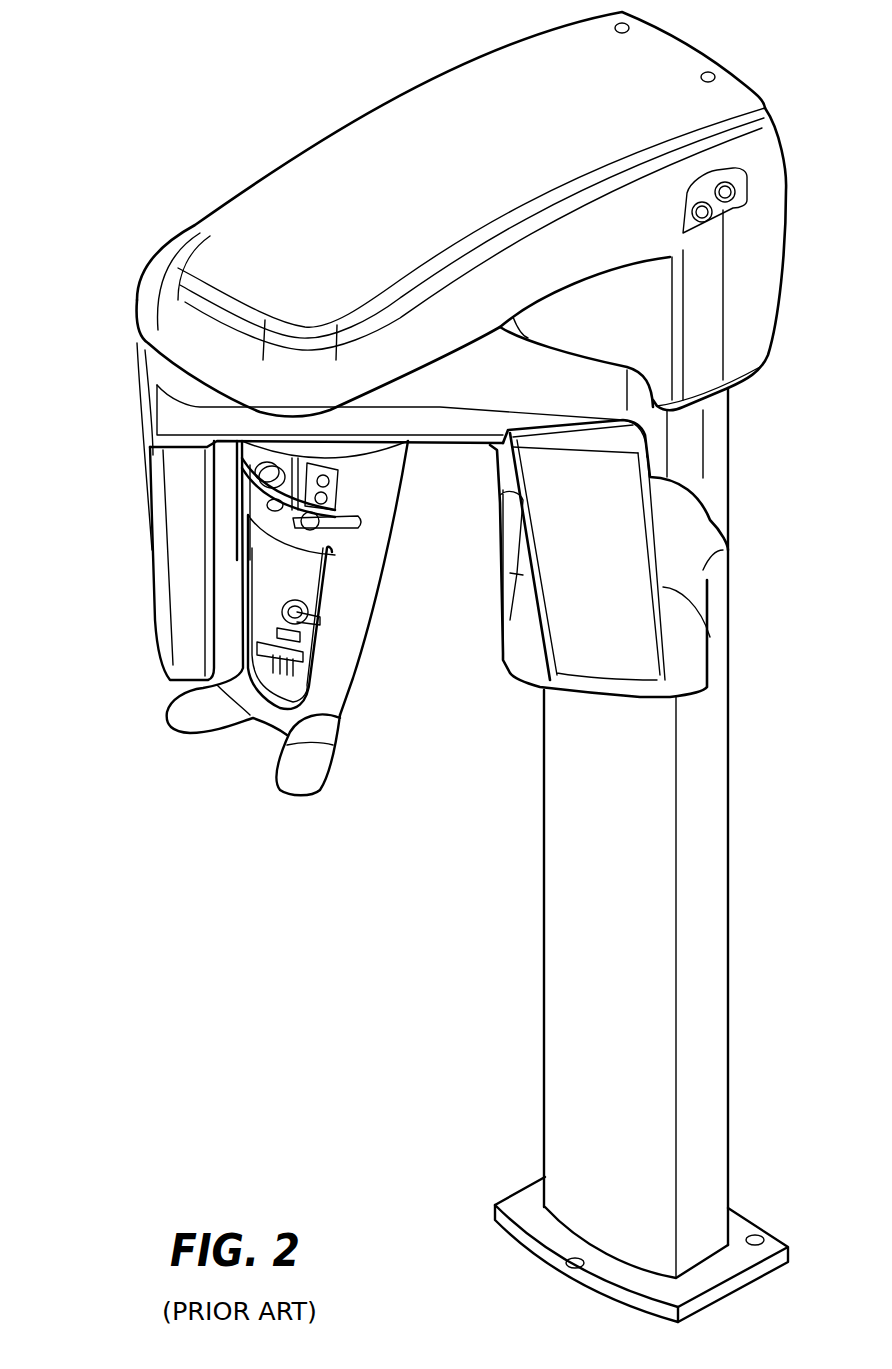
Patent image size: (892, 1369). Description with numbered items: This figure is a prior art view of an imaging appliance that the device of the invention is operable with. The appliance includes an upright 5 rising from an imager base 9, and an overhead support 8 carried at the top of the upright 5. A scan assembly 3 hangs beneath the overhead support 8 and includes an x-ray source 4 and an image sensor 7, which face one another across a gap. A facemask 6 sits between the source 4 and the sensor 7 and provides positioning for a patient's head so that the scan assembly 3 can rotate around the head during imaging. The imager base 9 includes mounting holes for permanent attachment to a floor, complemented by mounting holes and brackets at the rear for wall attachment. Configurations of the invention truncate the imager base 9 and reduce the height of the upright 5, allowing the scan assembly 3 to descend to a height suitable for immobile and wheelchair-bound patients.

The scan assembly 3 is at (442, 418).
The x-ray source 4 is at (570, 615).
The upright 5 is at (578, 860).
The facemask 6 is at (193, 718).
The image sensor 7 is at (183, 596).
The overhead support 8 is at (262, 178).
The imager base 9 is at (522, 1208).